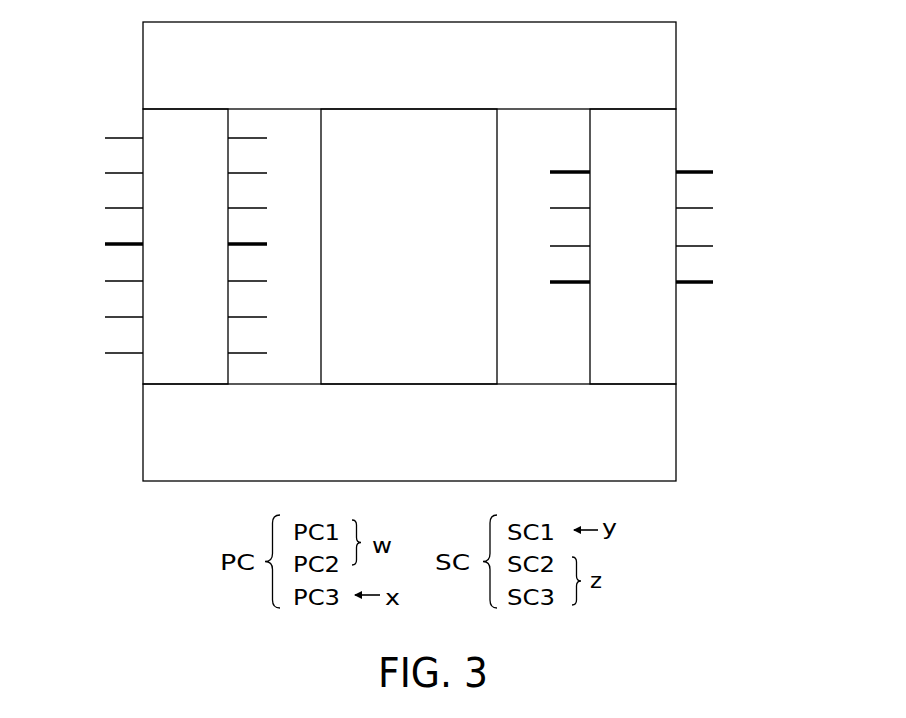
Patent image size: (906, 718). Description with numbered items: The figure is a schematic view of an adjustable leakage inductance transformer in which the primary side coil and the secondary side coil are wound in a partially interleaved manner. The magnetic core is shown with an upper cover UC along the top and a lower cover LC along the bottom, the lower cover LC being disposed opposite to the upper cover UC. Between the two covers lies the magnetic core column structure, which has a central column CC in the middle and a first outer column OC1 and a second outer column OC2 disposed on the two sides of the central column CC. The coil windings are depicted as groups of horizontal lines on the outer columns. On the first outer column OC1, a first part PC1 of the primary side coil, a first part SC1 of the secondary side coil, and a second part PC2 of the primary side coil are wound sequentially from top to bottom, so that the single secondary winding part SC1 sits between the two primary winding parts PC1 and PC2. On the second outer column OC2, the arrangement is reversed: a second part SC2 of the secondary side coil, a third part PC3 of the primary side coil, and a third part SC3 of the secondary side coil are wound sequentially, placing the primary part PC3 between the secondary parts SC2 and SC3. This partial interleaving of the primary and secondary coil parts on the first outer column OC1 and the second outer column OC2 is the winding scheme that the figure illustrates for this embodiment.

The upper cover UC is at (143, 66).
The lower cover LC is at (143, 432).
The first outer column OC1 is at (143, 374).
The second outer column OC2 is at (676, 353).
The central column CC is at (408, 109).
The first part of the primary side coil PC1 is at (97, 127).
The second part of the primary side coil PC2 is at (97, 273).
The third part of the primary side coil PC3 is at (722, 205).
The first part of the secondary side coil SC1 is at (100, 244).
The second part of the secondary side coil SC2 is at (717, 172).
The third part of the secondary side coil SC3 is at (717, 282).